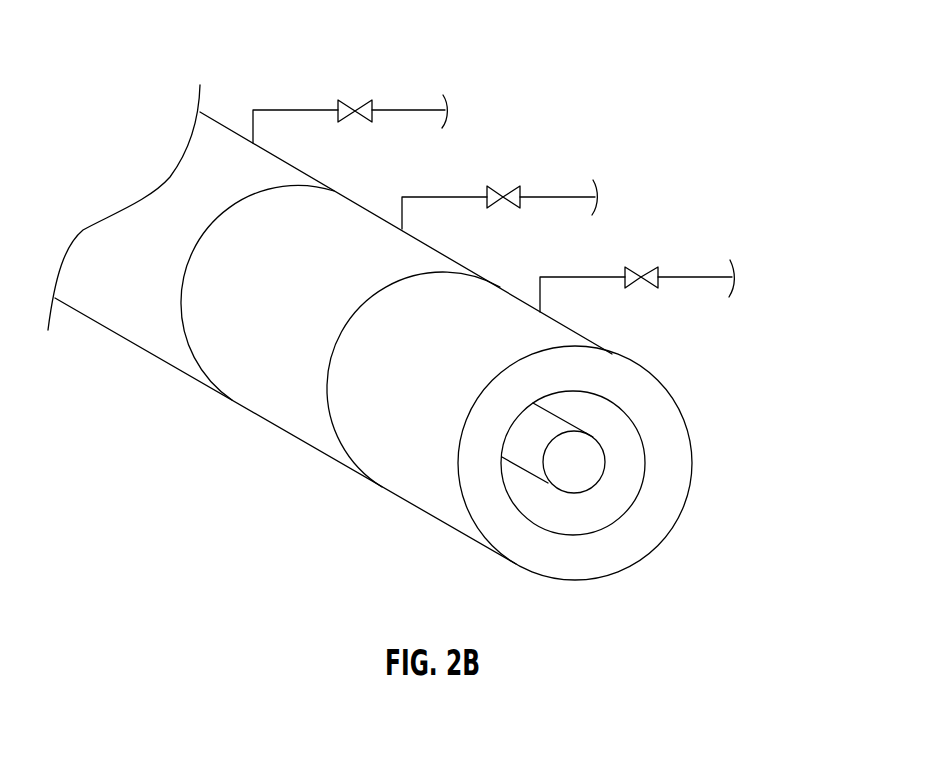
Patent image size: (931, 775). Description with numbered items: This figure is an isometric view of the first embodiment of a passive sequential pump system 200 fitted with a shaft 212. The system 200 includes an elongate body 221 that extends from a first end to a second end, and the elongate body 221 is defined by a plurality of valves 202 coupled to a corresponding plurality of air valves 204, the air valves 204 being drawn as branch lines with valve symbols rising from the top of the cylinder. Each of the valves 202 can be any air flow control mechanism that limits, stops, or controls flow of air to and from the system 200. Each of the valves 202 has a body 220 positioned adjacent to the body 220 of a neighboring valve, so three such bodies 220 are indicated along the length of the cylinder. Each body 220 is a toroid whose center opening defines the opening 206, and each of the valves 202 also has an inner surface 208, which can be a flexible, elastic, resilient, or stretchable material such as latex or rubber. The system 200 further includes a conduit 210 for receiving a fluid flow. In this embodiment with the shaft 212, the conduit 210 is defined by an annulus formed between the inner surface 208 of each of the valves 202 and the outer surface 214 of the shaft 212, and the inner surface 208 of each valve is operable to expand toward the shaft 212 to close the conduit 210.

The passive sequential pump system 200 is at (696, 98).
The valves 202 is at (215, 505).
The air valves 204 is at (405, 110).
The opening 206 is at (632, 433).
The inner surface 208 is at (608, 413).
The conduit 210 is at (612, 505).
The shaft 212 is at (583, 477).
The outer surface 214 is at (522, 443).
The body 220 is at (155, 343).
The elongate body 221 is at (578, 332).